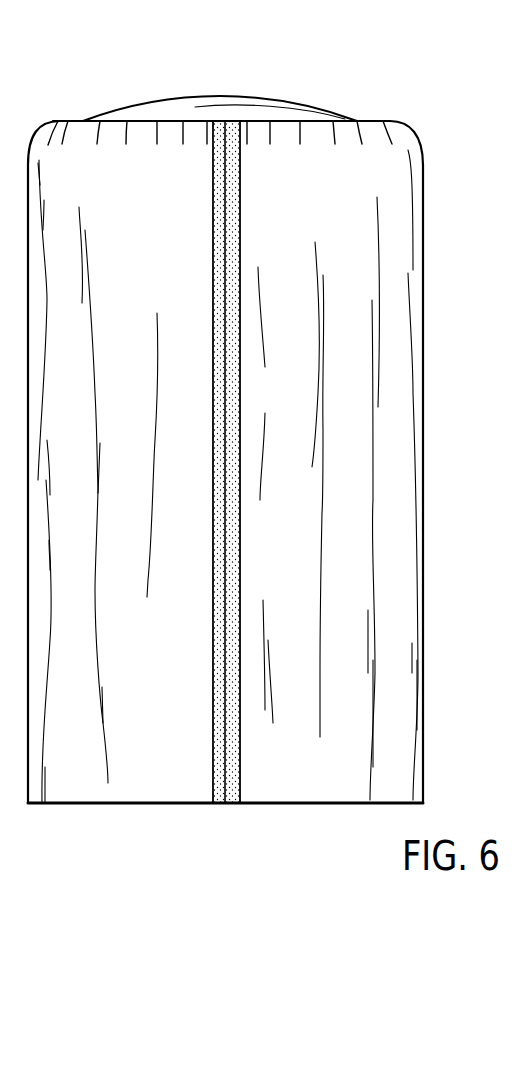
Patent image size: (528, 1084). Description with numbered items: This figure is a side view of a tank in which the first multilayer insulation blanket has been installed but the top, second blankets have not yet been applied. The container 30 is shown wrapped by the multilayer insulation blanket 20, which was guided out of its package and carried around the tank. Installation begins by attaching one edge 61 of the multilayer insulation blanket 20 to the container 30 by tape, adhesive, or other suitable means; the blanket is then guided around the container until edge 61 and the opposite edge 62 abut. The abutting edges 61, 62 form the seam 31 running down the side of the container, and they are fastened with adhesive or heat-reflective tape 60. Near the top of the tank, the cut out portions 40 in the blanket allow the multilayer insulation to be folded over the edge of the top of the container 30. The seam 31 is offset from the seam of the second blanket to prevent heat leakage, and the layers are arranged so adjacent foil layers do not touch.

The multilayer insulation blanket 20 is at (423, 418).
The container 30 is at (211, 97).
The seam 31 is at (237, 168).
The cut out portions 40 is at (85, 127).
The heat-reflective tape 60 is at (222, 263).
The edge 61 is at (214, 338).
The edge 62 is at (238, 378).